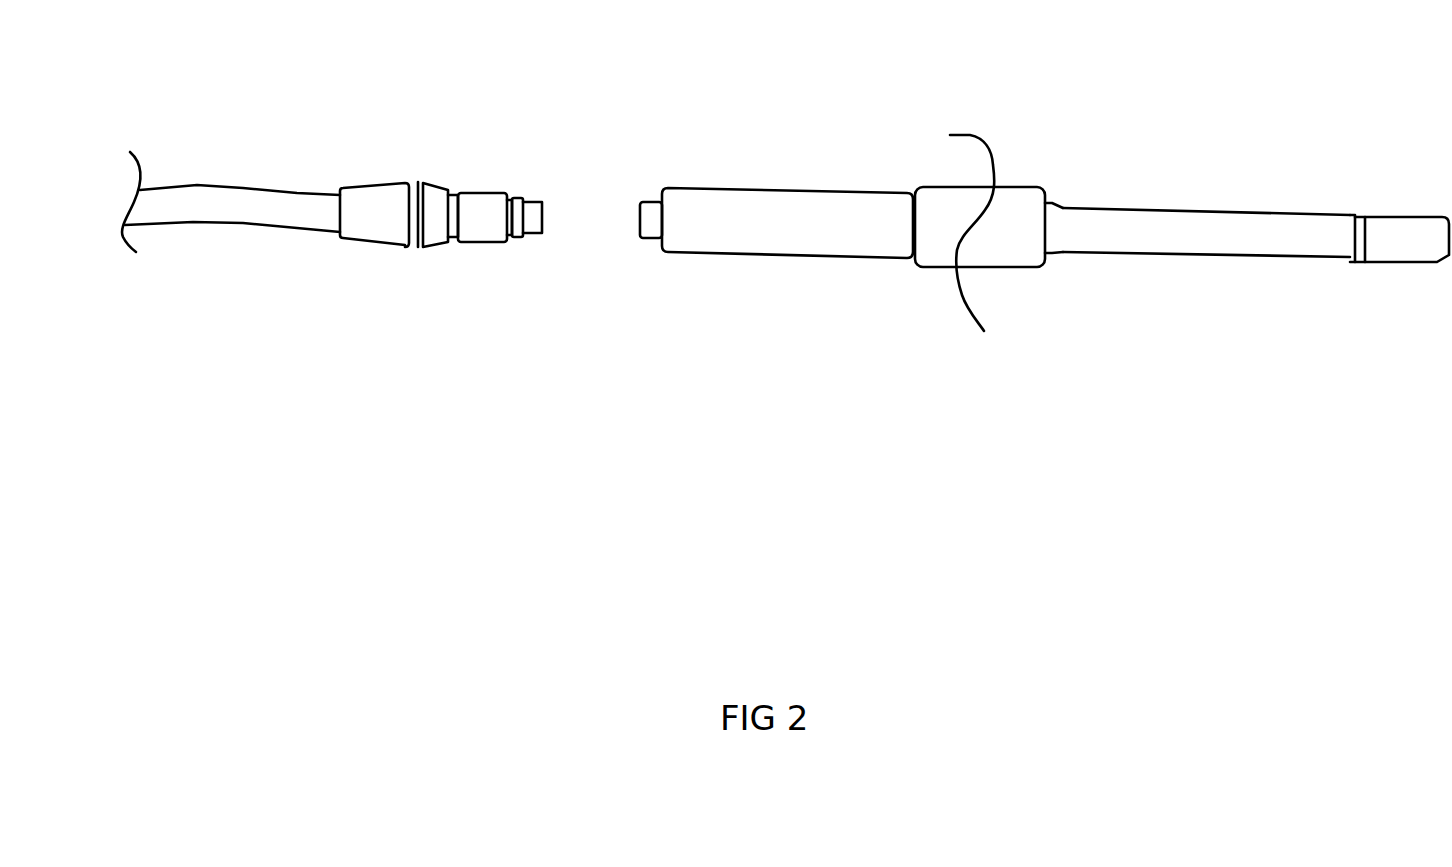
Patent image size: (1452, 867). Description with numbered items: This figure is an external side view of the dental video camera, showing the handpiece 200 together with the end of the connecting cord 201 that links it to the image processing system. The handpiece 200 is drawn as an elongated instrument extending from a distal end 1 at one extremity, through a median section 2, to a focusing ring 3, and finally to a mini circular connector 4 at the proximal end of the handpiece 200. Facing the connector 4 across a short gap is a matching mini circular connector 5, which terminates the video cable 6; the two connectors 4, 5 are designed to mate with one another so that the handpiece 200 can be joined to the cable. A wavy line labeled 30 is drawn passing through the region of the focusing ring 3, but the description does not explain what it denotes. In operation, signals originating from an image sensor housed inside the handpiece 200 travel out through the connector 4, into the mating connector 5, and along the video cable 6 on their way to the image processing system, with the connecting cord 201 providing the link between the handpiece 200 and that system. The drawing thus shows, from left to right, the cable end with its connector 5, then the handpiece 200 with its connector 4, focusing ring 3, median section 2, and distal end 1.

The distal end 1 is at (1403, 213).
The median section 2 is at (1207, 255).
The focusing ring 3 is at (1033, 267).
The mini circular connector 4 is at (647, 243).
The matching mini circular connector 5 is at (480, 190).
The video cable 6 is at (351, 228).
The lead wire 30 is at (949, 224).
The handpiece 200 is at (1177, 239).
The connecting cord 201 is at (262, 230).